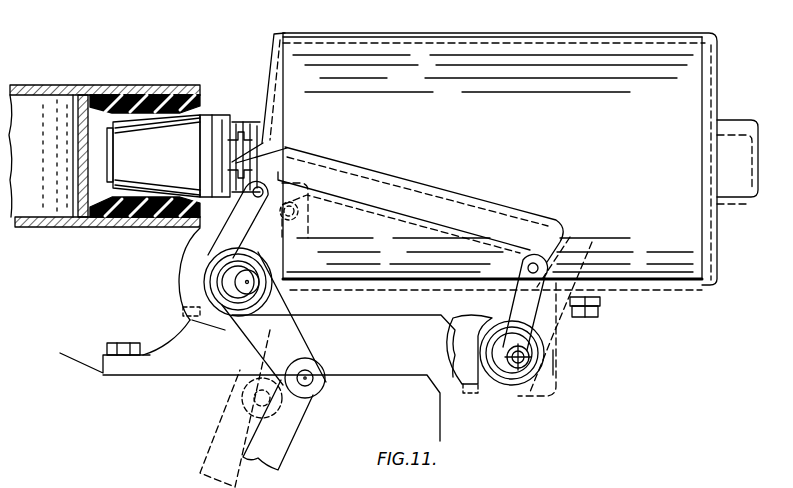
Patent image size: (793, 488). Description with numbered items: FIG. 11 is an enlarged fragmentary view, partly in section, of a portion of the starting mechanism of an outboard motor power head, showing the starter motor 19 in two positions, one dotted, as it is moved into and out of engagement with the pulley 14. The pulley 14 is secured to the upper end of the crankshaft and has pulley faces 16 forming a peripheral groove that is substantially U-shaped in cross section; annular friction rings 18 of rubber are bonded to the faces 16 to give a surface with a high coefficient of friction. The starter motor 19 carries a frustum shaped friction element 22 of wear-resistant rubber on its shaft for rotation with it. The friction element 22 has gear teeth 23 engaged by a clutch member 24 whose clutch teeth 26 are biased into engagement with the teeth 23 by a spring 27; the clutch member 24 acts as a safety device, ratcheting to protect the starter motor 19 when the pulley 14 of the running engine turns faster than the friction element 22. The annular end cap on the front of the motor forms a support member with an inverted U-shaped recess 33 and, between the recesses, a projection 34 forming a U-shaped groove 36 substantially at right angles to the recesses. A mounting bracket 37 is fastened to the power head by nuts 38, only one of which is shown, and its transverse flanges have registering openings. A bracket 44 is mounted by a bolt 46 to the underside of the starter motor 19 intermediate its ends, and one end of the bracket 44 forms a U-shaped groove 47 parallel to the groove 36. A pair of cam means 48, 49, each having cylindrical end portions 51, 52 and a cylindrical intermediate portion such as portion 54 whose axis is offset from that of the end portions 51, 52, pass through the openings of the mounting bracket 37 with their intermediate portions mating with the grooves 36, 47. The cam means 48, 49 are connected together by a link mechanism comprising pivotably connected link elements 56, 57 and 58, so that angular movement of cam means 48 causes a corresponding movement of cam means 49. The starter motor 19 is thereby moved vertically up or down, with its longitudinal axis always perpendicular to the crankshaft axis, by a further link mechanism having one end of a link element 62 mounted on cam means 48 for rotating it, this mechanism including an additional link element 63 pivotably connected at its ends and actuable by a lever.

The pulley 14 is at (127, 93).
The pulley faces 16 is at (110, 92).
The annular friction rings 18 is at (158, 97).
The starter motor 19 is at (687, 92).
The frustum shaped friction element 22 is at (187, 133).
The gear teeth 23 is at (207, 137).
The clutch member 24 is at (263, 134).
The clutch teeth 26 is at (287, 148).
The spring 27 is at (247, 140).
The U-shaped recess 33 is at (210, 253).
The projection 34 is at (243, 254).
The U-shaped groove 36 is at (237, 282).
The mounting bracket 37 is at (388, 364).
The nut 38 is at (108, 347).
The bracket 44 is at (555, 337).
The bolt 46 is at (583, 316).
The U-shaped groove 47 is at (504, 371).
The cam means 48 is at (250, 282).
The cam means 49 is at (521, 386).
The cylindrical end portions 51 is at (222, 289).
The cylindrical end portions 52 is at (495, 357).
The cylindrical intermediate portion 54 is at (553, 362).
The link element 56 is at (250, 223).
The link element 57 is at (462, 203).
The link element 58 is at (503, 303).
The link element 62 is at (292, 337).
The link element 63 is at (283, 442).